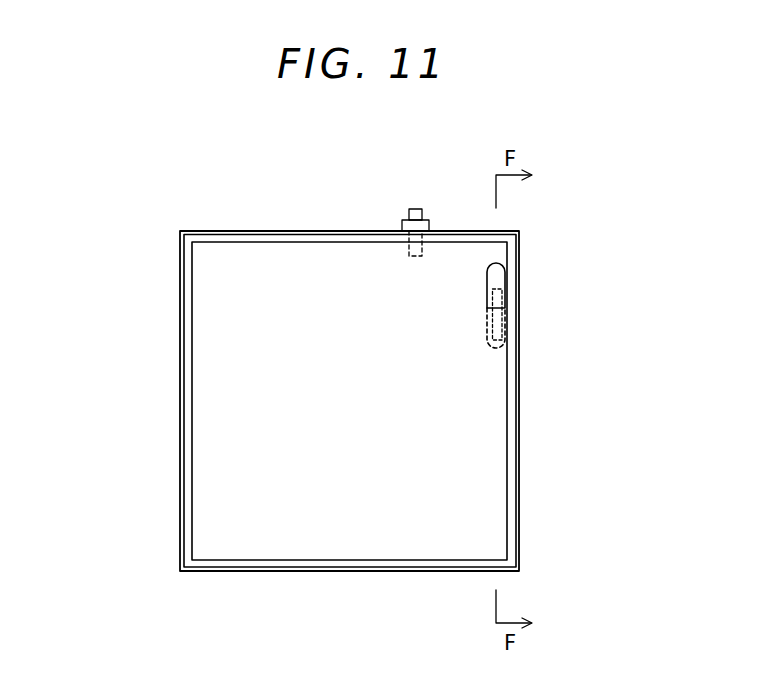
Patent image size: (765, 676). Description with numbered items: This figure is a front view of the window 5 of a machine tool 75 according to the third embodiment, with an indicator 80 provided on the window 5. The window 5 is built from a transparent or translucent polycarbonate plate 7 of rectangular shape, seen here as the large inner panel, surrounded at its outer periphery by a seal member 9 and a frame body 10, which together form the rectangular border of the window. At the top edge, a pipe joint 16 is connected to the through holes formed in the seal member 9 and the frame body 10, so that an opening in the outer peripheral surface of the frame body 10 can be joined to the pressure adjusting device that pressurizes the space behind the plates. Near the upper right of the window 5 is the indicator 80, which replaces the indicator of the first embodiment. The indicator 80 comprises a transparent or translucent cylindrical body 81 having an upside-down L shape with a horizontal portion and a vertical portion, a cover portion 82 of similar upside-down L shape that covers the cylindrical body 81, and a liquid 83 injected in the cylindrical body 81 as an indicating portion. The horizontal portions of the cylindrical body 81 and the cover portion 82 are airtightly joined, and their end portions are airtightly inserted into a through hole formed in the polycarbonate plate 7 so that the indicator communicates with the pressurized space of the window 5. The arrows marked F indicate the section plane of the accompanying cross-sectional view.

The window 5 is at (399, 360).
The polycarbonate plate 7 is at (218, 495).
The seal member 9 is at (513, 473).
The frame body 10 is at (520, 418).
The pipe joint 16 is at (402, 221).
The machine tool 75 is at (96, 362).
The indicator 80 is at (570, 305).
The cylindrical body 81 is at (499, 270).
The cover portion 82 is at (503, 338).
The liquid 83 is at (497, 298).